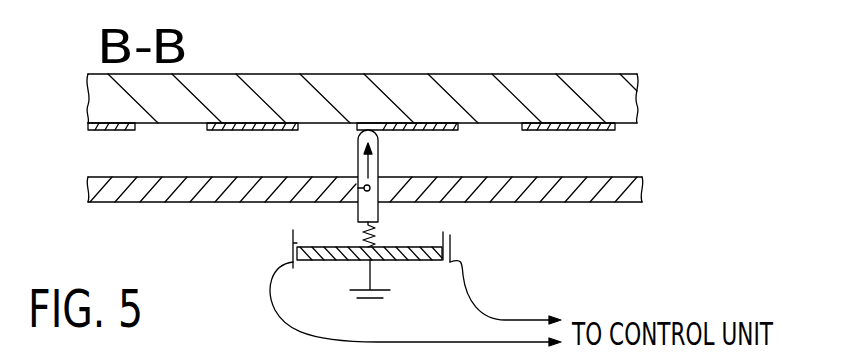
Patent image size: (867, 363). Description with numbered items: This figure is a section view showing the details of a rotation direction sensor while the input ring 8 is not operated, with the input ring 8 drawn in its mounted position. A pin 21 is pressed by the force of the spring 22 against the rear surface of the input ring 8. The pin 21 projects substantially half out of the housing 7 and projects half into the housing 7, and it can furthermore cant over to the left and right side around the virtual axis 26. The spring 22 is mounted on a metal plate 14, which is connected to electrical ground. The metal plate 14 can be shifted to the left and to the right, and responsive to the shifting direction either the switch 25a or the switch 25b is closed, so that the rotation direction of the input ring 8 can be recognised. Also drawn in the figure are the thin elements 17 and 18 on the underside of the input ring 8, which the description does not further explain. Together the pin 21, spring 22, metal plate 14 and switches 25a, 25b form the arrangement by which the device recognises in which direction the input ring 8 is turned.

The input ring 8 is at (563, 74).
The housing 7 is at (613, 201).
The contact pad 17 is at (593, 130).
The contact pad 18 is at (163, 125).
The pin 21 is at (378, 147).
The virtual axis 26 is at (358, 188).
The spring 22 is at (358, 237).
The metal plate 14 is at (432, 262).
The switch 25a is at (452, 232).
The switch 25b is at (290, 242).